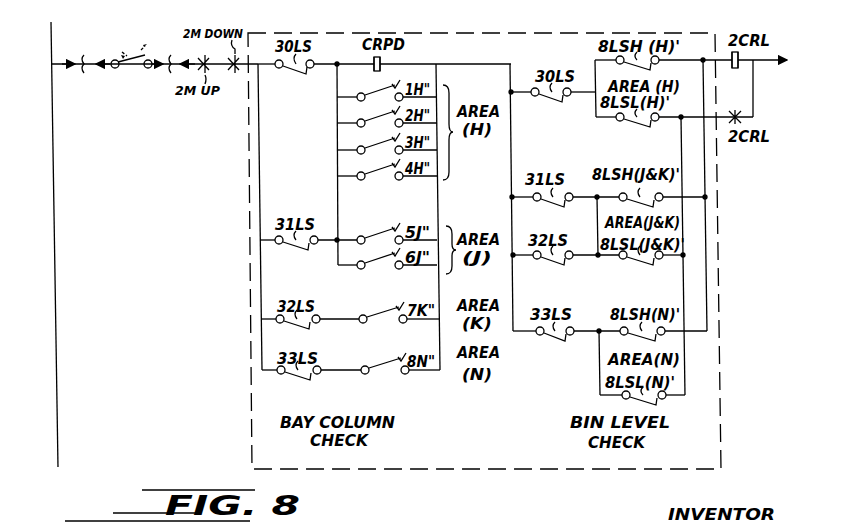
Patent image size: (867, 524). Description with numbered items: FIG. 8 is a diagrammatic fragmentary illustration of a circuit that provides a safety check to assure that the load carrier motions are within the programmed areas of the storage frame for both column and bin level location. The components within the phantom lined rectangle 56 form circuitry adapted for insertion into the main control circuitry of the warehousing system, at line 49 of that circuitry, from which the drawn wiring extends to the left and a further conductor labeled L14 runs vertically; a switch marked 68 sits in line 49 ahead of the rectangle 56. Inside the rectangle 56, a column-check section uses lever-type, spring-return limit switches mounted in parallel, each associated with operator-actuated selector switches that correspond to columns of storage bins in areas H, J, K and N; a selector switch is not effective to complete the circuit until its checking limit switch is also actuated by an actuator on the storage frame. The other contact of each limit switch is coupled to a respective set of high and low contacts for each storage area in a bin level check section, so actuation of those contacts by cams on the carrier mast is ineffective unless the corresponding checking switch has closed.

The line 49 is at (34, 66).
The switch 68 is at (136, 50).
The phantom lined rectangle 56 is at (250, 287).
The line L14 is at (54, 197).